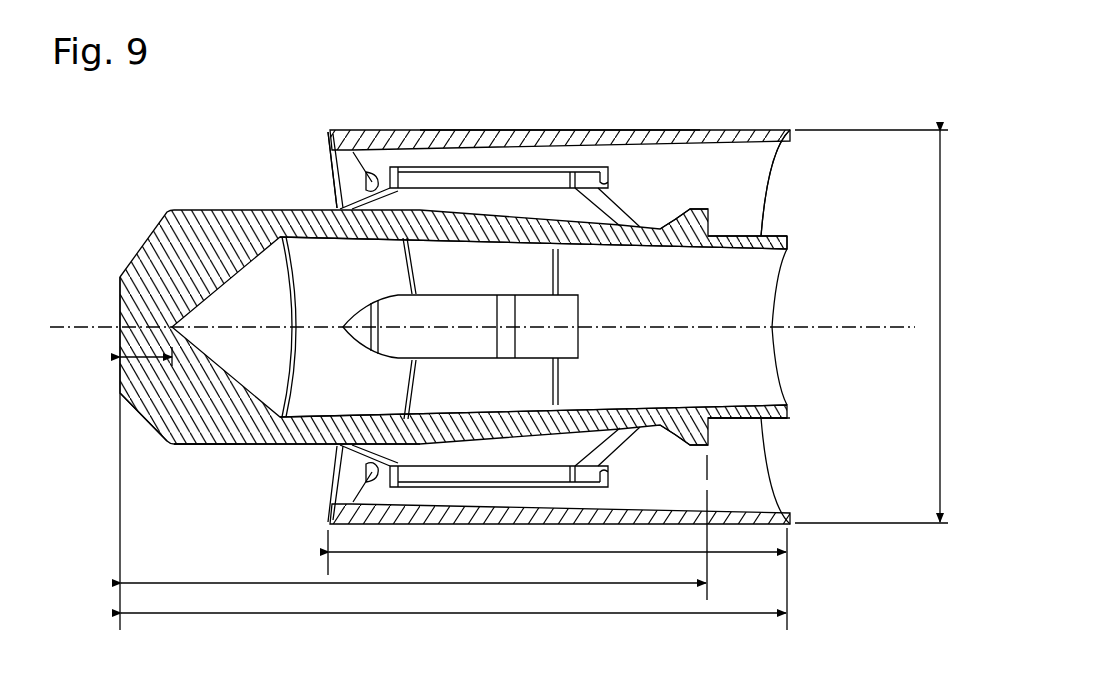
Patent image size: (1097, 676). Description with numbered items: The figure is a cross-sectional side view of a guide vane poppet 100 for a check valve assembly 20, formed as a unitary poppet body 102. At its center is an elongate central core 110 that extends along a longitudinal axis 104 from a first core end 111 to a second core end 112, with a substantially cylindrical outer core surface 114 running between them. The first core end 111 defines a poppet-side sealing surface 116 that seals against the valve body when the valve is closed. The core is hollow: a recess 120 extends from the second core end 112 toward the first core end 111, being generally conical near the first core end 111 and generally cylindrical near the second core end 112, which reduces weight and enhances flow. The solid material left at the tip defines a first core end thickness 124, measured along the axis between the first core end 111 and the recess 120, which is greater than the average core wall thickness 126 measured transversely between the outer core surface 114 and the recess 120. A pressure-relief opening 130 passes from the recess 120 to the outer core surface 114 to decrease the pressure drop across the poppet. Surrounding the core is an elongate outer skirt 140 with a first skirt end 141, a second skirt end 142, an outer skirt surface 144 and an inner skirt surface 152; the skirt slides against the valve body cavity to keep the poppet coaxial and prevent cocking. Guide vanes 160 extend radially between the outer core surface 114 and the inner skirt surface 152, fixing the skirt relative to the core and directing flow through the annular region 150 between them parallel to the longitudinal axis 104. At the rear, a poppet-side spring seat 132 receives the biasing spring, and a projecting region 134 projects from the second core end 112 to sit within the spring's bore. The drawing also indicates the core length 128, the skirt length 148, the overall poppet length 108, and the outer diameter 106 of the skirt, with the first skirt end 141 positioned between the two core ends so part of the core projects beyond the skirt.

The check valve assembly 20 is at (190, 112).
The guide vane poppet 100 is at (231, 146).
The unitary poppet body 102 is at (192, 210).
The longitudinal axis 104 is at (858, 327).
The outer diameter 106 is at (938, 255).
The poppet length 108 is at (450, 615).
The elongate central core 110 is at (180, 449).
The first core end 111 is at (120, 305).
The second core end 112 is at (789, 243).
The outer core surface 114 is at (215, 447).
The poppet-side sealing surface 116 is at (150, 428).
The recess 120 is at (743, 366).
The first core end thickness 124 is at (140, 368).
The average core wall thickness 126 is at (520, 460).
The core length 128 is at (410, 586).
The pressure-relief opening 130 is at (440, 350).
The poppet-side spring seat 132 is at (712, 440).
The projecting region 134 is at (762, 234).
The elongate outer skirt 140 is at (557, 162).
The first skirt end 141 is at (340, 148).
The second skirt end 142 is at (795, 135).
The outer skirt surface 144 is at (542, 130).
The skirt length 148 is at (515, 556).
The annular region 150 is at (557, 472).
The inner skirt surface 152 is at (750, 490).
The guide vane 160 is at (366, 182).